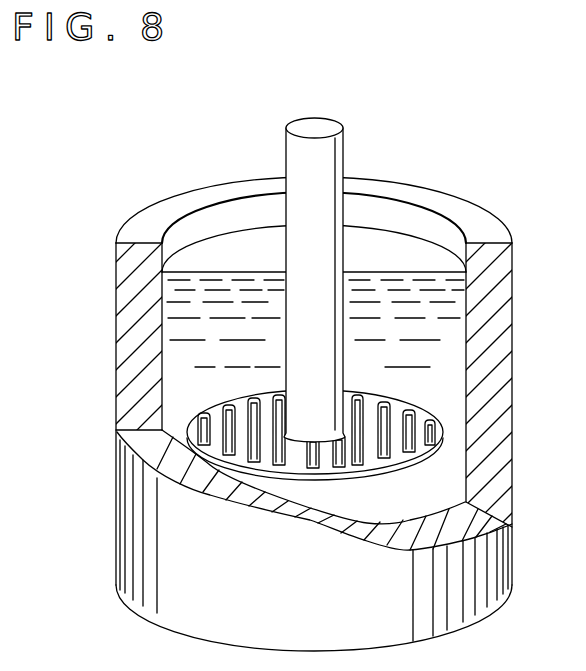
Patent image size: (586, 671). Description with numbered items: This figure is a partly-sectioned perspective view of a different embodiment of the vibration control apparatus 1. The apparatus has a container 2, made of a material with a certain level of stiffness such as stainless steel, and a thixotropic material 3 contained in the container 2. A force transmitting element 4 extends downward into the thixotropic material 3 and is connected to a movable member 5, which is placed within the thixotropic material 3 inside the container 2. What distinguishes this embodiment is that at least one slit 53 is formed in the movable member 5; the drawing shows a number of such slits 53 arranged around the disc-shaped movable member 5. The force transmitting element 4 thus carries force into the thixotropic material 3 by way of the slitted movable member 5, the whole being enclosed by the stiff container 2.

The vibration control apparatus 1 is at (112, 365).
The container 2 is at (502, 216).
The thixotropic material 3 is at (457, 357).
The force transmitting element 4 is at (346, 146).
The movable member 5 is at (371, 455).
The slit 53 is at (407, 398).